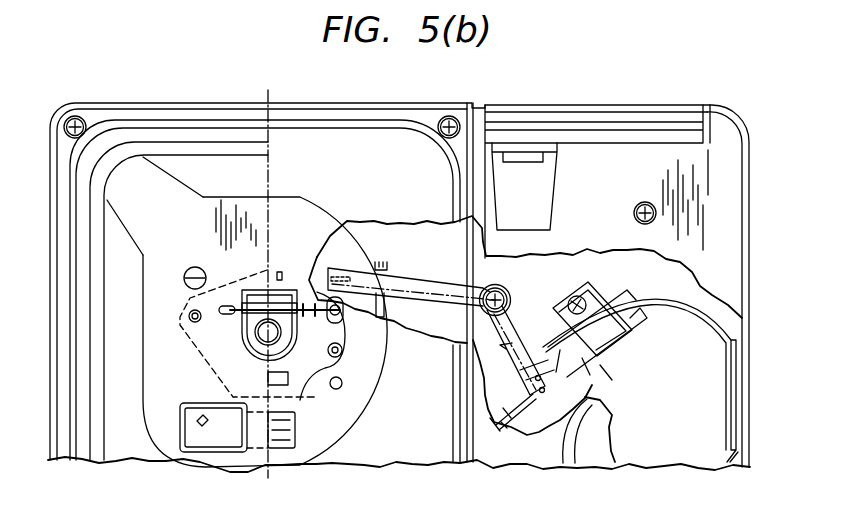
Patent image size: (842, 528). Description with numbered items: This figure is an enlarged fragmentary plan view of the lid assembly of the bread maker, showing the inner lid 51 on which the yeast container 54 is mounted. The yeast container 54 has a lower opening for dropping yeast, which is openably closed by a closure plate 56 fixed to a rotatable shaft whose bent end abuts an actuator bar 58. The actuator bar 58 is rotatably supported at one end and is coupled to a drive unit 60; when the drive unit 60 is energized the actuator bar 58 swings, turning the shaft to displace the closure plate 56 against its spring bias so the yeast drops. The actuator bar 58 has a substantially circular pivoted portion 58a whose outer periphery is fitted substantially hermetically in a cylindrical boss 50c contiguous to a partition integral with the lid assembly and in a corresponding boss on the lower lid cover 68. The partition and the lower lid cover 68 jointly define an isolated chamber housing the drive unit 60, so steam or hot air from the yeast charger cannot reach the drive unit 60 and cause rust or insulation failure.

The inner lid 51 is at (206, 165).
The yeast container 54 is at (302, 388).
The closure plate 56 is at (270, 330).
The actuator bar 58 is at (413, 287).
The pivoted portion 58a is at (516, 307).
The cylindrical boss 50c is at (503, 286).
The drive unit 60 is at (552, 407).
The lower lid cover 68 is at (720, 152).